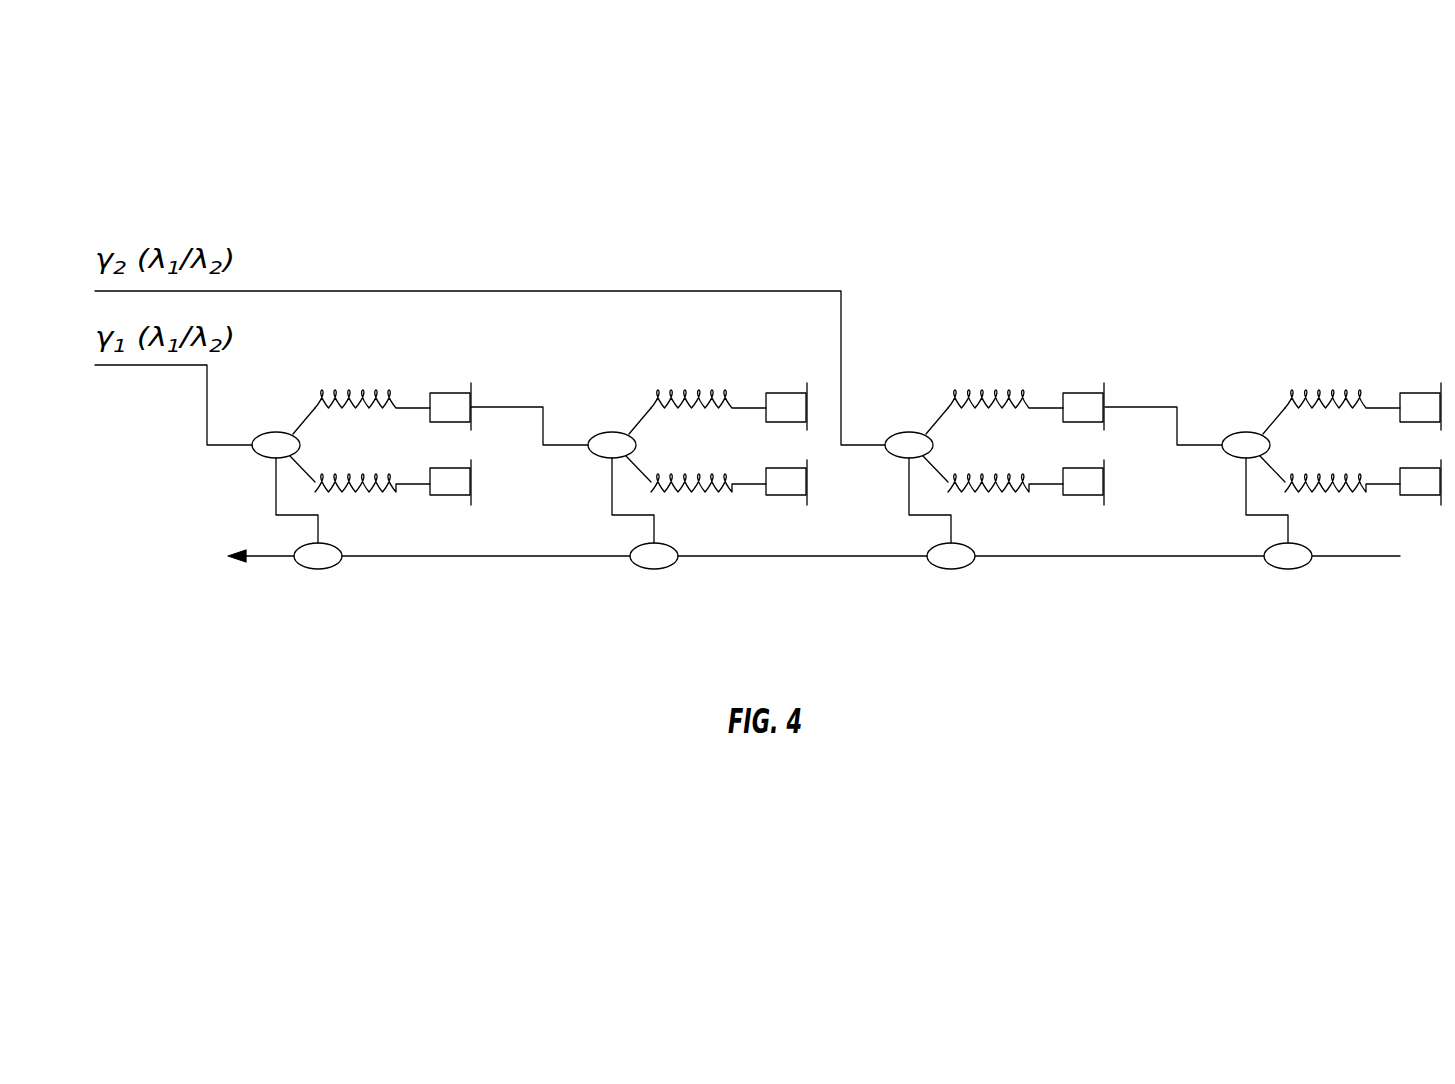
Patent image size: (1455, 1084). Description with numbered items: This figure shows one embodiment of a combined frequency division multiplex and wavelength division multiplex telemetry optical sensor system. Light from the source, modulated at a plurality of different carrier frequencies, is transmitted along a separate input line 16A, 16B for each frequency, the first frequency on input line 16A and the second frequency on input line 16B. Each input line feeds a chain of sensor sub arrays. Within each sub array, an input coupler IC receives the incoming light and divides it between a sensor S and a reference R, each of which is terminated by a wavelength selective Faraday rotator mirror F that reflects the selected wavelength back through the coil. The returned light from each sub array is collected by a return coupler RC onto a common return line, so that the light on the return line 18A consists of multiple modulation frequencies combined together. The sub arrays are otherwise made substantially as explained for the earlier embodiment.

The input line 16A is at (207, 405).
The input line 16B is at (430, 290).
The return line 18A is at (272, 553).
The input coupler IC is at (274, 432).
The sensor S is at (358, 392).
The reference R is at (362, 478).
The wavelength selective Faraday rotator mirror F is at (447, 393).
The return coupler RC is at (318, 570).